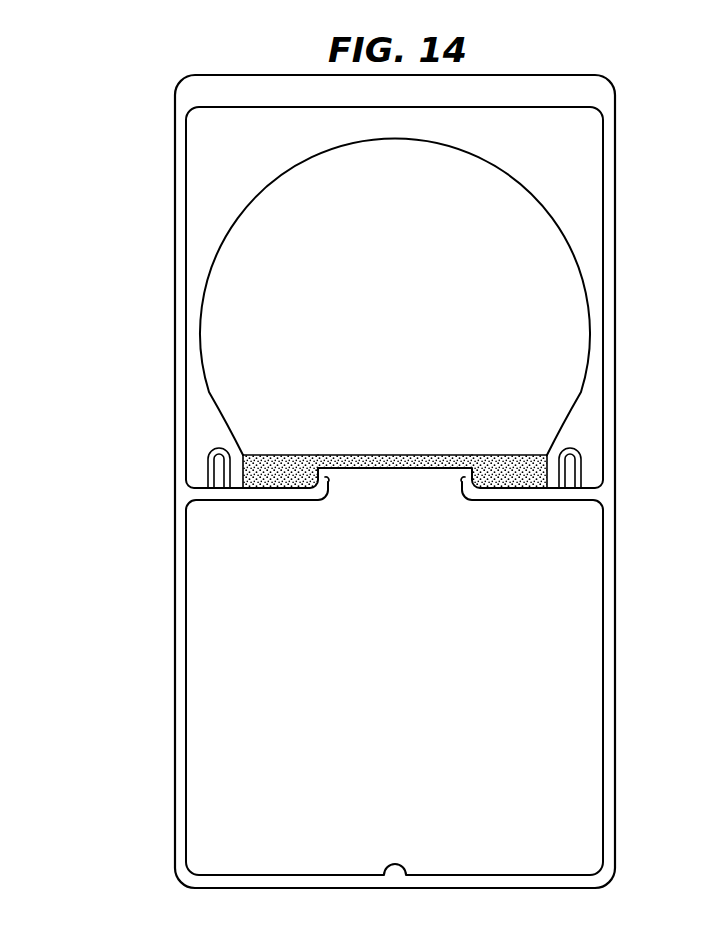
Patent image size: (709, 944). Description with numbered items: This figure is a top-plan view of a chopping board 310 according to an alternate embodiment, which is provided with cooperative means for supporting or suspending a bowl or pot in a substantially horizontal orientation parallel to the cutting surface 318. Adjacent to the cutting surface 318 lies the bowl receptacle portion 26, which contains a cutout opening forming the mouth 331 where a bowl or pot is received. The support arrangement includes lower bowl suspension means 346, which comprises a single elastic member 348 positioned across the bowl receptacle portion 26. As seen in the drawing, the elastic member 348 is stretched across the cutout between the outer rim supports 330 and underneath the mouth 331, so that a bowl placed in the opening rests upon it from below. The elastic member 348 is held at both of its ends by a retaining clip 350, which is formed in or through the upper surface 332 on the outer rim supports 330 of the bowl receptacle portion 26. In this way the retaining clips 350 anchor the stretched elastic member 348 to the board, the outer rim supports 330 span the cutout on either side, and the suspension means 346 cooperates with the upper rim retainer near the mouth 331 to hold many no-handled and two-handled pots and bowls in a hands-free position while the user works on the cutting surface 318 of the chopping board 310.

The chopping board 310 is at (148, 270).
The bowl receptacle portion 26 is at (566, 314).
The upper surface 332 is at (217, 153).
The outer rim supports 330 is at (202, 427).
The lower bowl suspension means 346 is at (243, 441).
The elastic member 348 is at (477, 455).
The mouth 331 is at (404, 469).
The retaining clip 350 is at (572, 467).
The cutting surface 318 is at (584, 615).